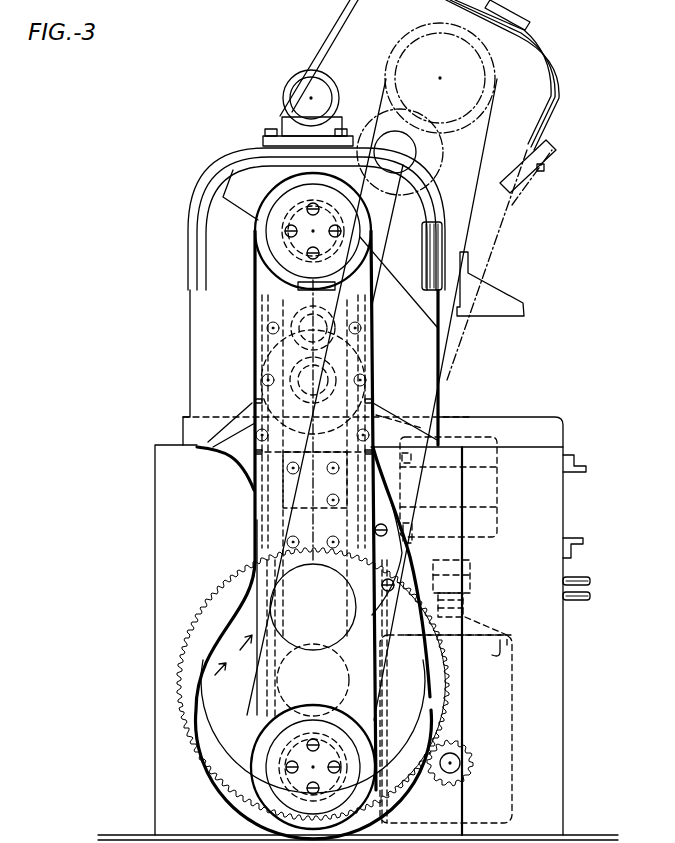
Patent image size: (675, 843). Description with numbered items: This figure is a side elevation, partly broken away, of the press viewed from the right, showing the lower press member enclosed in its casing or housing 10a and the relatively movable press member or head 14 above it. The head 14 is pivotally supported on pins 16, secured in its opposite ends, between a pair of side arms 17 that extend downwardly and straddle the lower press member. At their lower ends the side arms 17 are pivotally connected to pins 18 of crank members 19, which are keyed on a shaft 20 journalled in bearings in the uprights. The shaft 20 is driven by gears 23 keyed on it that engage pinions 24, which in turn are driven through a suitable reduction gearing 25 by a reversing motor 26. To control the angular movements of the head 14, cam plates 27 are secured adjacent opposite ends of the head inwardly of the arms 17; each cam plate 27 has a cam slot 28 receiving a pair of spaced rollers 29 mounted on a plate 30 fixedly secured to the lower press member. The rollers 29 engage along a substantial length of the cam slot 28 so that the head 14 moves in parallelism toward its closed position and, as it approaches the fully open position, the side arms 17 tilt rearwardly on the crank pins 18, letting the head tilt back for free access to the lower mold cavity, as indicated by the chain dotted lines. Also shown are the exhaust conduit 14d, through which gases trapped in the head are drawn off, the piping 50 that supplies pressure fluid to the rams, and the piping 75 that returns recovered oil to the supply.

The casing or housing 10a is at (553, 673).
The movable press member or head 14 is at (203, 311).
The exhaust conduit 14d is at (303, 89).
The pins 16 is at (262, 243).
The side arms 17 is at (258, 532).
The pins 18 is at (268, 786).
The crank members 19 is at (213, 728).
The shaft 20 is at (275, 680).
The gears 23 is at (460, 697).
The pinions 24 is at (473, 760).
The reduction gearing 25 is at (505, 650).
The reversing motor 26 is at (498, 525).
The cam plates 27 is at (433, 567).
The cam slot 28 is at (410, 538).
The rollers 29 is at (252, 347).
The plate 30 is at (252, 481).
The piping 50 is at (586, 601).
The piping 75 is at (590, 582).